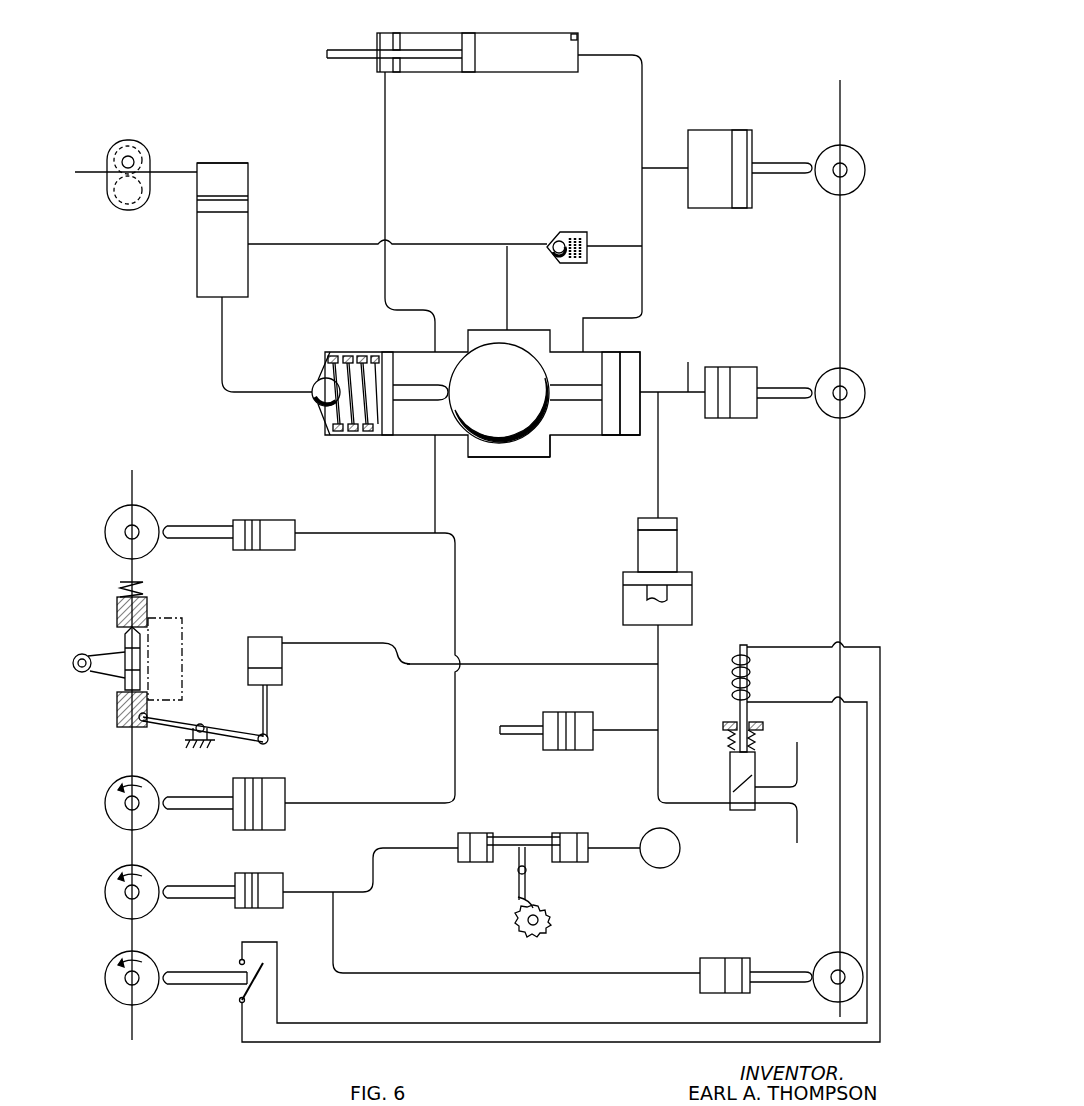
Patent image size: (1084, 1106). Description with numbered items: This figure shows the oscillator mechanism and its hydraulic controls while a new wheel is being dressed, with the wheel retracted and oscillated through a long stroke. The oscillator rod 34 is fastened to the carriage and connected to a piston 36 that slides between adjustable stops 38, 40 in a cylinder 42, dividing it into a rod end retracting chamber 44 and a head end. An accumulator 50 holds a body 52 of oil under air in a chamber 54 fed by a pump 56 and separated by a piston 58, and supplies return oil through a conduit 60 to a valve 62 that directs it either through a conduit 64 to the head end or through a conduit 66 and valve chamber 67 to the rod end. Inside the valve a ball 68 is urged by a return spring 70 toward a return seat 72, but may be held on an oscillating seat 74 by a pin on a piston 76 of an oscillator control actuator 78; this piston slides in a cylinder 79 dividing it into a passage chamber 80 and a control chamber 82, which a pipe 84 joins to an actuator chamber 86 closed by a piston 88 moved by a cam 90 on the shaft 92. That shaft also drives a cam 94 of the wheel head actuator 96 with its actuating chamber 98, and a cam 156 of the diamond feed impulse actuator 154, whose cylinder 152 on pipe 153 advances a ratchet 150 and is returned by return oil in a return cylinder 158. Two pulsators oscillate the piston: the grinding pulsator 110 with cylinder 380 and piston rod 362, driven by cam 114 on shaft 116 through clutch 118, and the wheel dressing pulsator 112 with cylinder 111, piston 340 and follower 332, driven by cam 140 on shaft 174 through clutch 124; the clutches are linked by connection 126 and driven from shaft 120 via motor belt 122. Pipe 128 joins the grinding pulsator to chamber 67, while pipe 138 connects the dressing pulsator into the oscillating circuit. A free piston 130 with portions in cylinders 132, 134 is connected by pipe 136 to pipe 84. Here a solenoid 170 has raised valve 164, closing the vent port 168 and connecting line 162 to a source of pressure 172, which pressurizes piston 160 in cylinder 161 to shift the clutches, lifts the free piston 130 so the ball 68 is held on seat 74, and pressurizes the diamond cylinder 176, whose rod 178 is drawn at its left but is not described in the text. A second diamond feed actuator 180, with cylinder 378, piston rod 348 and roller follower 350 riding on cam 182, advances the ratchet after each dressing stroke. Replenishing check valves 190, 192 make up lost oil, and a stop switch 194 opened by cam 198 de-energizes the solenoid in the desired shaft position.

The oscillator rod 34 is at (345, 58).
The piston 36 is at (468, 33).
The adjustable stop 38 is at (571, 34).
The adjustable stop 40 is at (396, 33).
The cylinder 42 is at (542, 33).
The rod end retracting chamber 44 is at (380, 38).
The accumulator 50 is at (197, 256).
The body of oil 52 is at (205, 282).
The air chamber 54 is at (230, 166).
The pump 56 is at (145, 145).
The piston 58 is at (240, 202).
The conduit 60 is at (420, 246).
The valve 62 is at (495, 463).
The conduit 64 is at (648, 75).
The conduit 66 is at (388, 172).
The valve chamber 67 is at (408, 435).
The ball 68 is at (480, 350).
The return spring 70 is at (350, 356).
The return seat 72 is at (552, 447).
The oscillating seat 74 is at (458, 448).
The piston 76 is at (616, 356).
The oscillator control actuator 78 is at (780, 405).
The cylinder 79 is at (645, 368).
The passage chamber 80 is at (598, 360).
The oscillator control chamber 82 is at (626, 430).
The pipe 84 is at (690, 380).
The actuator chamber 86 is at (712, 367).
The piston 88 is at (735, 367).
The cam 90 is at (842, 368).
The shaft 92 is at (842, 478).
The cam 94 is at (848, 146).
The wheel head actuator 96 is at (778, 148).
The actuating chamber 98 is at (705, 130).
The grinding pulsator 110 is at (245, 518).
The cylinder 111 is at (285, 826).
The wheel dressing pulsator 112 is at (270, 778).
The cam 114 is at (146, 516).
The shaft 116 is at (134, 486).
The clutch 118 is at (117, 610).
The shaft 120 is at (125, 688).
The motor belt 122 is at (105, 650).
The clutch 124 is at (120, 722).
The connection 126 is at (182, 625).
The pipe 128 is at (314, 536).
The free piston 130 is at (680, 552).
The cylinder 132 is at (680, 522).
The cylinder 134 is at (694, 606).
The pipe 136 is at (660, 476).
The pipe 138 is at (458, 706).
The cam 140 is at (106, 794).
The ratchet 150 is at (540, 912).
The cylinder 152 is at (465, 833).
The pipe 153 is at (373, 862).
The diamond feed impulse actuator 154 is at (785, 965).
The cam 156 is at (830, 953).
The return cylinder 158 is at (580, 833).
The piston 160 is at (282, 672).
The cylinder 161 is at (265, 637).
The pipe 162 is at (485, 666).
The valve 164 is at (727, 765).
The vent port 168 is at (797, 758).
The solenoid 170 is at (730, 680).
The source of pressure 172 is at (797, 840).
The shaft 174 is at (136, 766).
The cylinder 176 is at (585, 712).
The valve rod 178 is at (545, 740).
The diamond feed actuator 180 is at (175, 880).
The cam 182 is at (106, 882).
The replenishing check valve 190 is at (553, 232).
The replenishing check valve 192 is at (320, 380).
The stop switch 194 is at (240, 998).
The cam 198 is at (106, 968).
The roller cam follower 332 is at (195, 796).
The piston 340 is at (250, 822).
The piston rod 348 is at (208, 898).
The roller follower 350 is at (165, 898).
The piston rod 362 is at (198, 540).
The cylinder 378 is at (268, 908).
The cylinder 380 is at (268, 550).